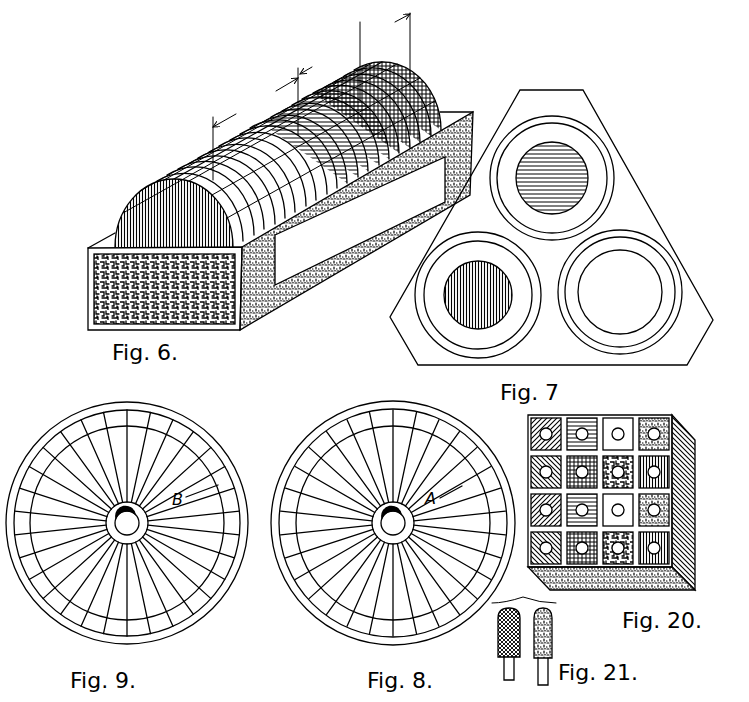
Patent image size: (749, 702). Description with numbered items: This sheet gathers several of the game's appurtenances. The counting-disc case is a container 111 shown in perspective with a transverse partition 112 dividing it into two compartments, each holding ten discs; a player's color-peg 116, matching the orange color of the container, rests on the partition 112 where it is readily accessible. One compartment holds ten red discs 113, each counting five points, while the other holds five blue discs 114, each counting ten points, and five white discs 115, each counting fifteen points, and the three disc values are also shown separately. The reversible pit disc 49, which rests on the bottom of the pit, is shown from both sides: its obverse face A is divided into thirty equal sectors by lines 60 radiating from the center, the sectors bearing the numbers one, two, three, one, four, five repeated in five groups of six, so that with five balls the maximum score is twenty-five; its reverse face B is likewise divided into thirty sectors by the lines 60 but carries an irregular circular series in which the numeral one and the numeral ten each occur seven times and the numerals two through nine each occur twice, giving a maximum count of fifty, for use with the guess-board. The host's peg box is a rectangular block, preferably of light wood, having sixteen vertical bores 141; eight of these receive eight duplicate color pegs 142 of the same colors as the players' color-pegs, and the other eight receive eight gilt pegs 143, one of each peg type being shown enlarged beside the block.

In FIG. 6, the container 111 is at (112, 284).
In FIG. 6, the transverse partition 112 is at (338, 178).
In FIG. 6, the red discs 113 is at (213, 176).
In FIG. 7, the red discs 113 is at (460, 283).
In FIG. 6, the blue discs 114 is at (362, 103).
In FIG. 7, the blue discs 114 is at (574, 148).
In FIG. 6, the white discs 115 is at (390, 70).
In FIG. 7, the white discs 115 is at (628, 270).
In FIG. 6, the color-peg 116 is at (422, 90).
In FIG. 9, the lines 60 is at (197, 496).
In FIG. 8, the lines 60 is at (320, 508).
In FIG. 9, the reversible pit disc 49 is at (250, 632).
In FIG. 8, the reversible pit disc 49 is at (393, 531).
In FIG. 20, the vertical bores 141 is at (619, 432).
In FIG. 21, the duplicate color pegs 142 is at (507, 643).
In FIG. 21, the gilt pegs 143 is at (545, 648).